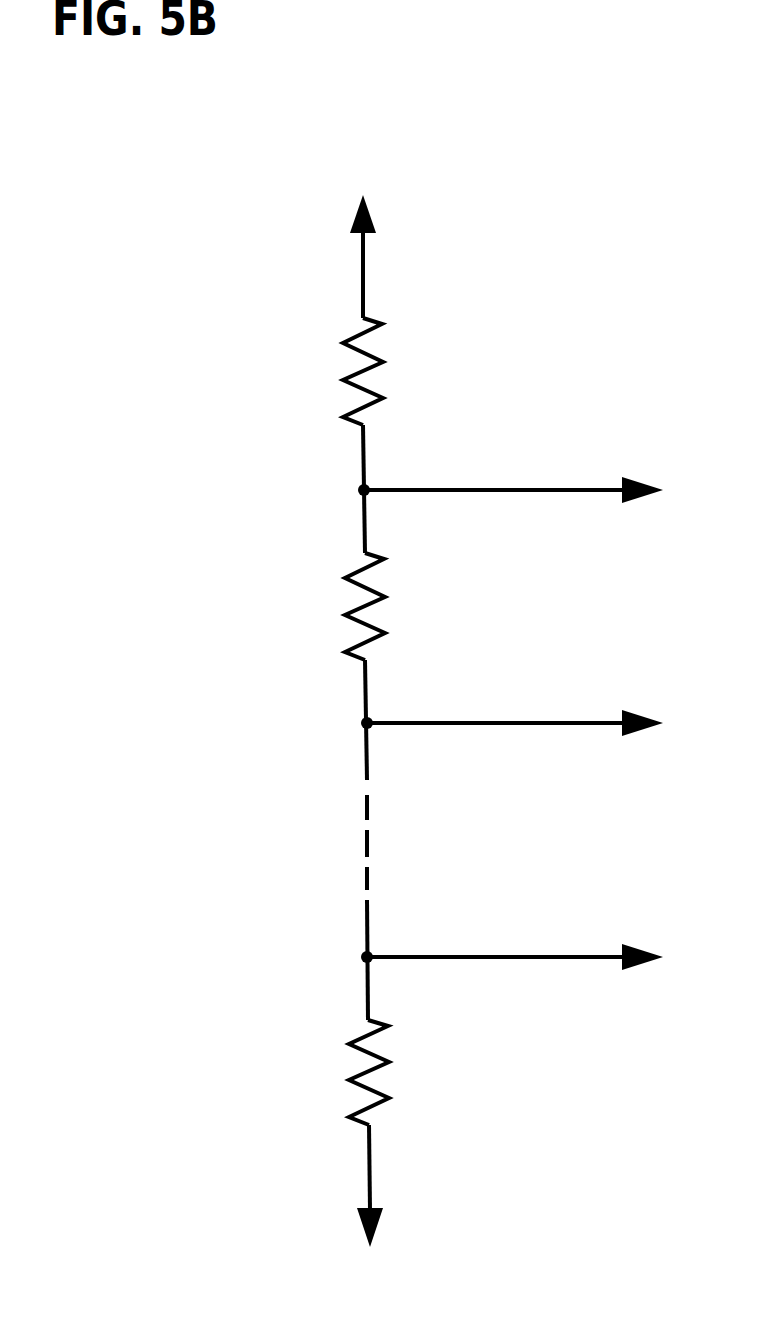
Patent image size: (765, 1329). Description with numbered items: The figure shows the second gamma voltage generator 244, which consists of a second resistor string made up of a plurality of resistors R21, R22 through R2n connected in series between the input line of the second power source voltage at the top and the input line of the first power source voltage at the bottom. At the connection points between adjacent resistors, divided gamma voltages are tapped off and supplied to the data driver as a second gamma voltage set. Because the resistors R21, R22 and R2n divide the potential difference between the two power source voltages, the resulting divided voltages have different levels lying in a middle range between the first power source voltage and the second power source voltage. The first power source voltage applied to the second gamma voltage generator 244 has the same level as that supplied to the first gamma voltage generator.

The second gamma voltage generator 244 is at (663, 133).
The resistor R21 is at (300, 371).
The resistor R22 is at (301, 606).
The resistor R2n is at (305, 1072).